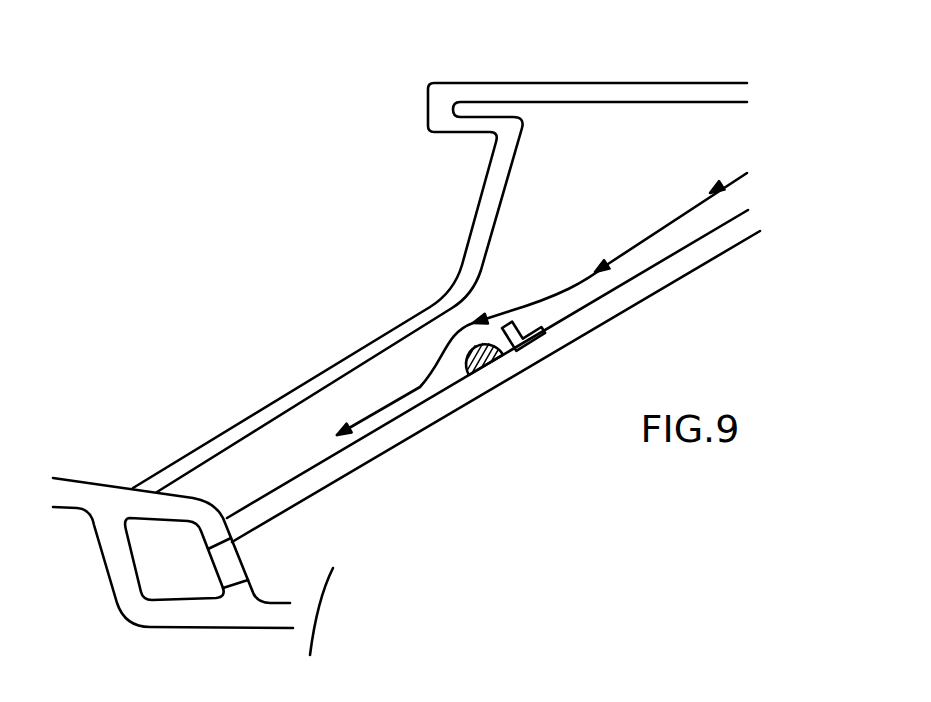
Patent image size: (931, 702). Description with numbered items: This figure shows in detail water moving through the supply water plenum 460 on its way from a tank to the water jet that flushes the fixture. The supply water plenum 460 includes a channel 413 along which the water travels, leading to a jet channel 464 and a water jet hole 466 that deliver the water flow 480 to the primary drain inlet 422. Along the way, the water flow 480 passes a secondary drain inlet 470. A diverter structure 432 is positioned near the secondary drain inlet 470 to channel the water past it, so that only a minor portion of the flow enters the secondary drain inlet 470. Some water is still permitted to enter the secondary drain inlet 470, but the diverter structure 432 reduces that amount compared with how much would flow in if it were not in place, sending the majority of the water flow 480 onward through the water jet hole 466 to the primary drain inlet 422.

The channel 413 is at (482, 108).
The supply water plenum 460 is at (698, 162).
The water flow 480 is at (627, 254).
The diverter structure 432 is at (522, 318).
The secondary drain inlet 470 is at (500, 363).
The jet channel 464 is at (148, 555).
The water jet hole 466 is at (227, 560).
The primary drain inlet 422 is at (300, 626).